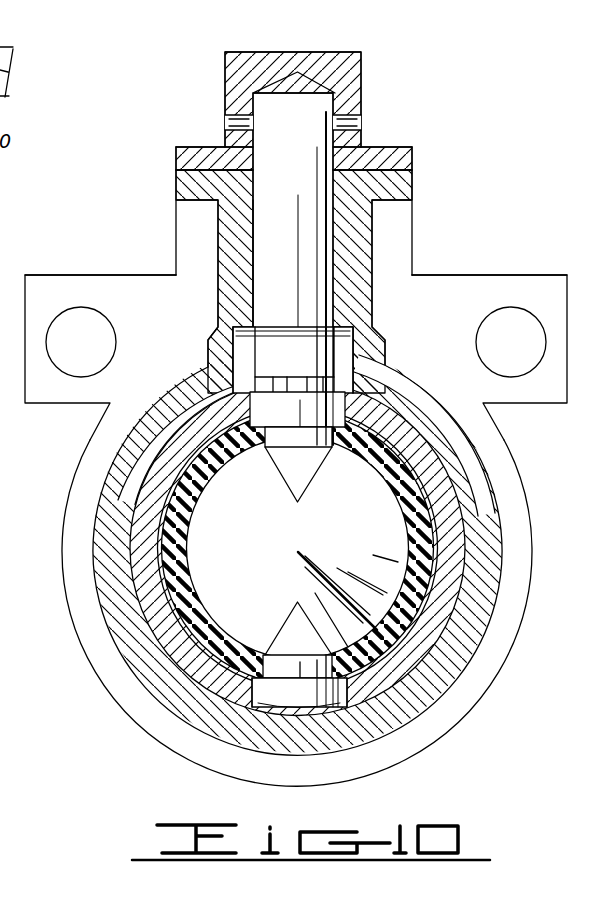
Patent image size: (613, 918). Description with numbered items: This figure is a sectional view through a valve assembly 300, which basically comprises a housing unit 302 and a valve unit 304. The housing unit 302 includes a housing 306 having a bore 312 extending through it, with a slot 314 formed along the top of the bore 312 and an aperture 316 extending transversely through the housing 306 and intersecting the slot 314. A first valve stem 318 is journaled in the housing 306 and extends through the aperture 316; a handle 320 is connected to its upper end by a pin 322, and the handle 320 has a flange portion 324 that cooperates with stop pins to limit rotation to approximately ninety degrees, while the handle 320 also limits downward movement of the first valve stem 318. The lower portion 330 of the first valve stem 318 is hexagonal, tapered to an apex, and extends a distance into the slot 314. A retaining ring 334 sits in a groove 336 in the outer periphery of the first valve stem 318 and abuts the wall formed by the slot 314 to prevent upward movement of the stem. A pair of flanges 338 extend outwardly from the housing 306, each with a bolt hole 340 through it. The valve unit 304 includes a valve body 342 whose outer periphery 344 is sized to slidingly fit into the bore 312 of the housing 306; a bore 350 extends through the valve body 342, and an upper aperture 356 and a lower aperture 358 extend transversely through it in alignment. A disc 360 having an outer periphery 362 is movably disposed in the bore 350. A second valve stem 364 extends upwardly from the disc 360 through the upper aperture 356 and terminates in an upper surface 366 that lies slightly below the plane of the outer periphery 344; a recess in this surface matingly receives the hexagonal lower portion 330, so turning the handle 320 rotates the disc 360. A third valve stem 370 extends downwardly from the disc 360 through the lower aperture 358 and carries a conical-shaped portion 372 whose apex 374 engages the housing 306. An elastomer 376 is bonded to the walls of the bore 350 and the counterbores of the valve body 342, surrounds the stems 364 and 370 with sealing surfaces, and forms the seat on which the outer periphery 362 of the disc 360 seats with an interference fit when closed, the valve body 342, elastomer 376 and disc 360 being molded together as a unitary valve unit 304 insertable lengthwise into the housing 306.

The valve assembly 300 is at (470, 170).
The housing unit 302 is at (416, 227).
The valve unit 304 is at (468, 489).
The housing 306 is at (232, 253).
The bore 312 is at (141, 724).
The slot 314 is at (238, 367).
The aperture 316 is at (256, 223).
The first valve stem 318 is at (320, 150).
The handle 320 is at (350, 68).
The pin 322 is at (237, 120).
The flange portion 324 is at (183, 158).
The lower portion 330 is at (313, 385).
The retaining ring 334 is at (233, 328).
The groove 336 is at (284, 332).
The flanges 338 is at (72, 287).
The bolt holes 340 is at (56, 369).
The valve body 342 is at (108, 682).
The outer periphery 344 is at (136, 616).
The bore 350 is at (366, 677).
The upper aperture 356 is at (245, 404).
The lower aperture 358 is at (246, 677).
The disc 360 is at (394, 547).
The outer periphery 362 is at (193, 508).
The second valve stem 364 is at (312, 418).
The upper surface 366 is at (244, 393).
The third valve stem 370 is at (303, 700).
The conical-shaped portion 372 is at (294, 711).
The apex 374 is at (300, 712).
The elastomer 376 is at (172, 545).